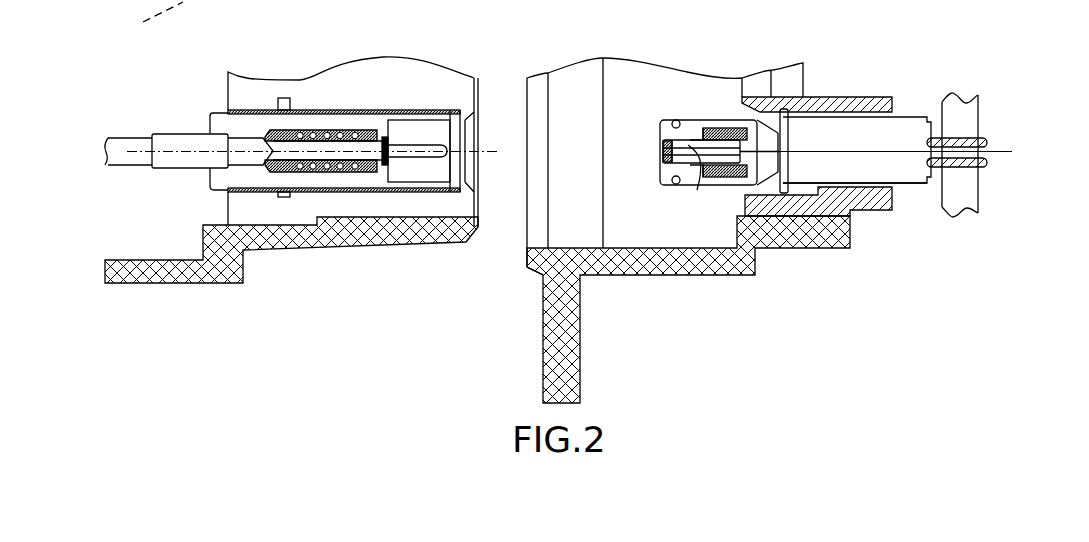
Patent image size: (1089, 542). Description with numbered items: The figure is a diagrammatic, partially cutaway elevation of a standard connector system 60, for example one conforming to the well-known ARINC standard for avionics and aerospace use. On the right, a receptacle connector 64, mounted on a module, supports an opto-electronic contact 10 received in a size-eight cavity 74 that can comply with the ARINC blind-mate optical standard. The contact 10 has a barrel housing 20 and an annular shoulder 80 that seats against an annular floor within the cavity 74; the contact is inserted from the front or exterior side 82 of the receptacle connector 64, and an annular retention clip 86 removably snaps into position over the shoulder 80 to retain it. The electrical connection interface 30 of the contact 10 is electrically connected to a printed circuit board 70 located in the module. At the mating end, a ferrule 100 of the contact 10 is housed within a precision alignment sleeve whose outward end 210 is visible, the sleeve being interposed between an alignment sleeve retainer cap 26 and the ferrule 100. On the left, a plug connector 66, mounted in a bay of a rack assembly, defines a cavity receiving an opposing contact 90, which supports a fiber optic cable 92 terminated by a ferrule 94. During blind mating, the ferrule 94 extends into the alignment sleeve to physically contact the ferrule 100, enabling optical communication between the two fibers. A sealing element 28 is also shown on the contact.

The opto-electronic contact 10 is at (903, 110).
The barrel housing 20 is at (903, 186).
The alignment sleeve retainer cap 26 is at (697, 118).
The sealing ring 28 is at (675, 119).
The electrical connection interface 30 is at (990, 134).
The standard connector system 60 is at (765, 58).
The receptacle connector 64 is at (657, 276).
The plug connector 66 is at (305, 250).
The printed circuit board 70 is at (955, 92).
The cavity 74 is at (748, 112).
The annular shoulder 80 is at (791, 130).
The front or exterior side 82 is at (527, 249).
The annular retention clip 86 is at (762, 186).
The opposing contact 90 is at (217, 112).
The fiber optic cable 92 is at (120, 167).
The ferrule 94 is at (417, 147).
The ferrule 100 is at (697, 190).
The outward end of precision alignment sleeve 210 is at (662, 152).